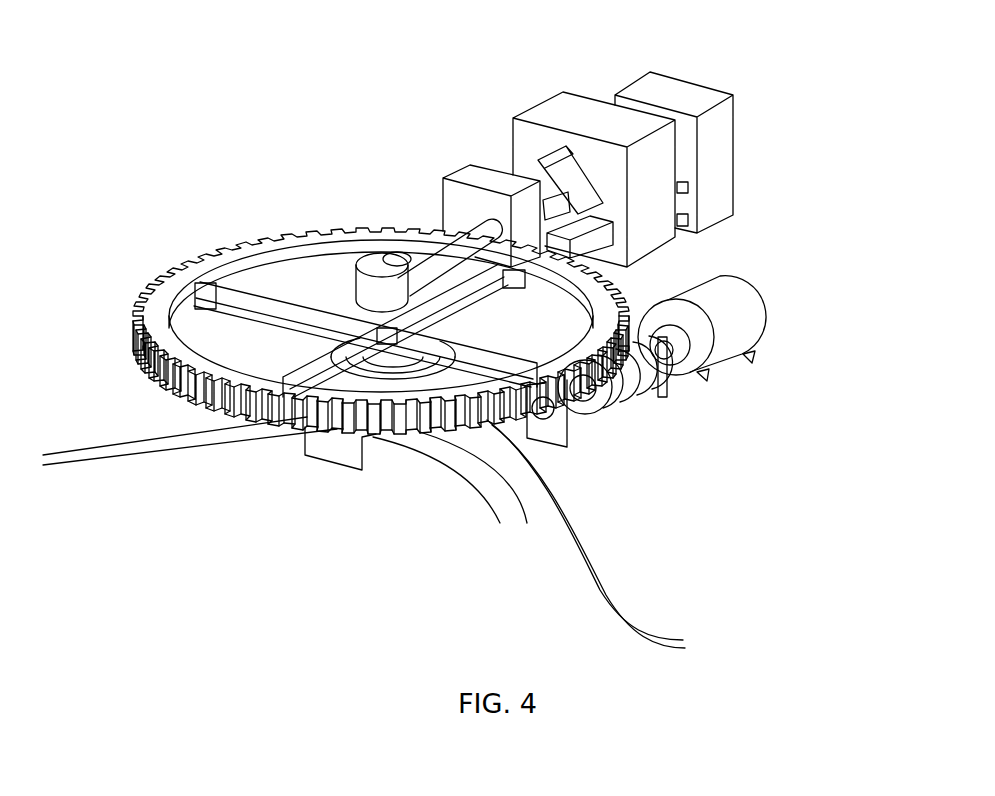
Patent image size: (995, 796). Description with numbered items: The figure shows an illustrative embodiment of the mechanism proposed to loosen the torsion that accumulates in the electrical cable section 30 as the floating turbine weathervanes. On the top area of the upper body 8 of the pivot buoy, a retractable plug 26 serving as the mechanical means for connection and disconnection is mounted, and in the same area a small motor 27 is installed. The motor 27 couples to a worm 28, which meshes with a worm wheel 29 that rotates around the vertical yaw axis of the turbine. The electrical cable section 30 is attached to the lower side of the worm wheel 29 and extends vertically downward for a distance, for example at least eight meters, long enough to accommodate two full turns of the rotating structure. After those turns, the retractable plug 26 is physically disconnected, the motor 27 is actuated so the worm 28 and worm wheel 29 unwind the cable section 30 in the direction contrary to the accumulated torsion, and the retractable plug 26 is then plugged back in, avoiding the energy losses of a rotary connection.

The upper body 8 is at (192, 423).
The retractable plug 26 is at (577, 192).
The motor 27 is at (715, 312).
The worm 28 is at (617, 370).
The worm wheel 29 is at (255, 278).
The electrical cable section 30 is at (485, 482).